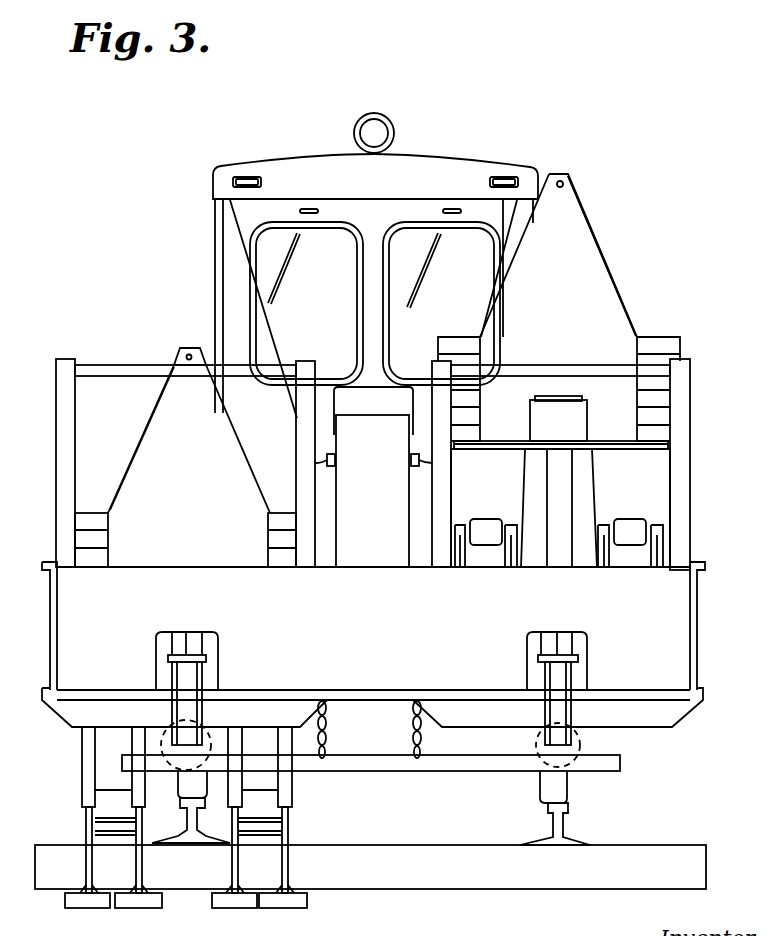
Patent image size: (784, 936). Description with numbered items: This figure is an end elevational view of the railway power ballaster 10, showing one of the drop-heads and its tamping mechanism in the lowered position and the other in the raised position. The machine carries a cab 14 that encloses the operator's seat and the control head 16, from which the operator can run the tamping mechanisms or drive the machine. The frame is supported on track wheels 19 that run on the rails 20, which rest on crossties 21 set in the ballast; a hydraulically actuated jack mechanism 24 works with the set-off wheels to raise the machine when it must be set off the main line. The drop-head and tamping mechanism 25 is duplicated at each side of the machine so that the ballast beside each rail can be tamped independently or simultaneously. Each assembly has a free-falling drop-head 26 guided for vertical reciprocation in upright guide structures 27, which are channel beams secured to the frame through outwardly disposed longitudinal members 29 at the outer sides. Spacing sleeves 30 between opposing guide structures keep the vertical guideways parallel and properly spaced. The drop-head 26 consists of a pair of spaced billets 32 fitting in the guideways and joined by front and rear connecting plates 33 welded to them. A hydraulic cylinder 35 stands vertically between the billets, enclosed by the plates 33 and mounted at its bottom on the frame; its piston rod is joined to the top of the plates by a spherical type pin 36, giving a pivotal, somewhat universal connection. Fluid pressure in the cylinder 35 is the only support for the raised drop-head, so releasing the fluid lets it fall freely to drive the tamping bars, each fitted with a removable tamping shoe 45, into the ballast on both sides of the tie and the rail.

The railway power ballaster 10 is at (207, 166).
The cab 14 is at (461, 170).
The control head 16 is at (388, 398).
The track wheels 19 is at (568, 790).
The rails 20 is at (190, 835).
The crossties 21 is at (620, 882).
The jack mechanism 24 is at (183, 698).
The drop-head and tamping mechanism 25 is at (133, 440).
The drop-head 26 is at (597, 241).
The upright guide structures 27 is at (58, 472).
The outer longitudinal members 29 is at (50, 637).
The spacing sleeves 30 is at (128, 366).
The billets 32 is at (82, 532).
The connecting plates 33 is at (590, 278).
The hydraulic cylinder 35 is at (575, 494).
The spherical type pin 36 is at (566, 184).
The tamping shoe 45 is at (128, 898).